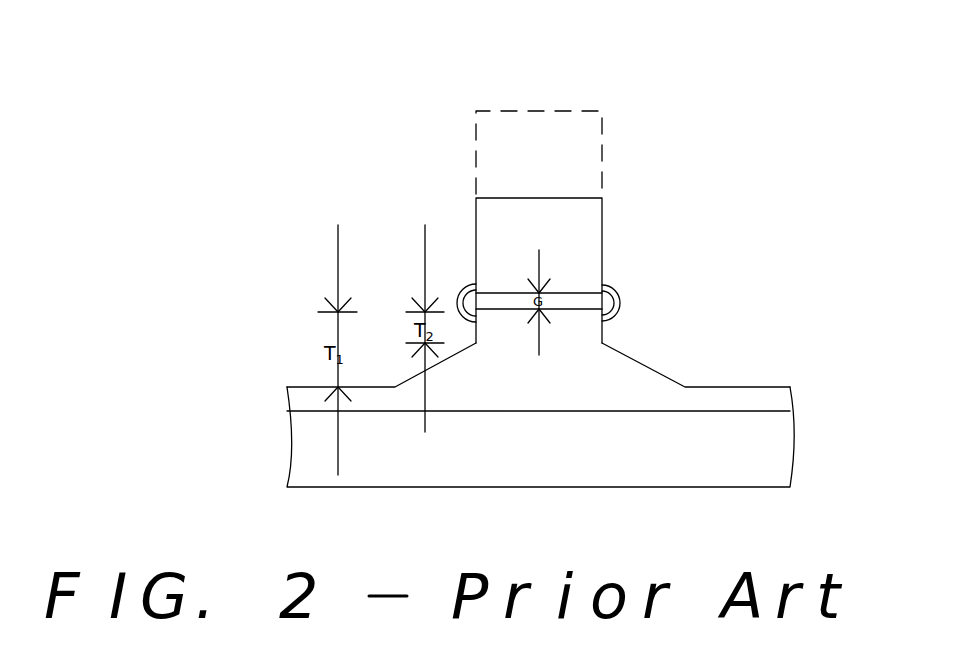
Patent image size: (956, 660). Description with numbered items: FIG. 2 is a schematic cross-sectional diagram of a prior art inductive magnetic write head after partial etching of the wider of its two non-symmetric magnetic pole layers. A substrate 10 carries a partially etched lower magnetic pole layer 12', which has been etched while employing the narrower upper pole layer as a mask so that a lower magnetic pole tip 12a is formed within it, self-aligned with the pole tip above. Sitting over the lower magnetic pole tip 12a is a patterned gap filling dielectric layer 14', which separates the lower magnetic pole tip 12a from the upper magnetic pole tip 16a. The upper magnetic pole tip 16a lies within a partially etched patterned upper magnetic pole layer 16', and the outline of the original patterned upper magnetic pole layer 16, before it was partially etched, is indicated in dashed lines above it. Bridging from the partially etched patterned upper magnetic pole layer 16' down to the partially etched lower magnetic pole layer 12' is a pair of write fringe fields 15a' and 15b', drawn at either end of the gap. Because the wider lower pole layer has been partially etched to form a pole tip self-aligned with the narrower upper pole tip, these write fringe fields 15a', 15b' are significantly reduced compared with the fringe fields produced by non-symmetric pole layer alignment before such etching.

The substrate 10 is at (305, 456).
The partially etched lower magnetic pole layer 12' is at (489, 375).
The lower magnetic pole tip 12a is at (563, 309).
The patterned gap filling dielectric layer 14' is at (539, 416).
The significantly reduced write fringe field 15a' is at (417, 246).
The significantly reduced write fringe field 15b' is at (655, 290).
The patterned upper magnetic pole layer 16 is at (480, 152).
The partially etched patterned upper magnetic pole layer 16' is at (587, 270).
The upper magnetic pole tip 16a is at (510, 293).